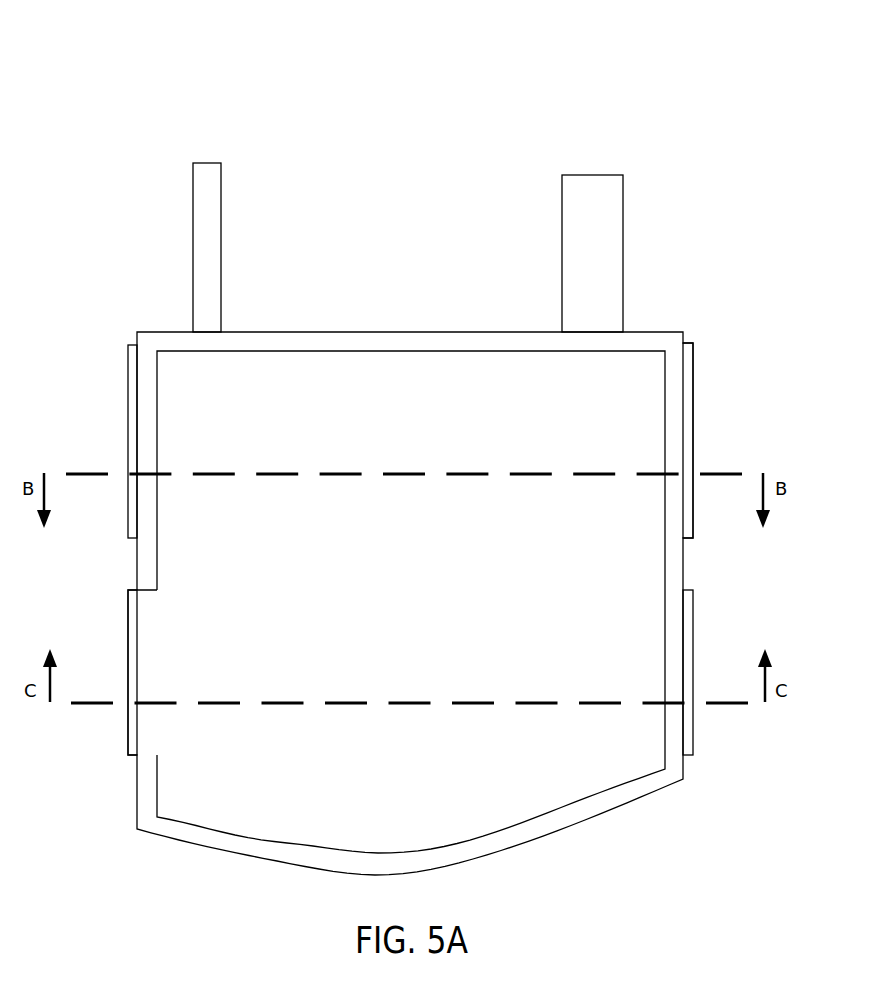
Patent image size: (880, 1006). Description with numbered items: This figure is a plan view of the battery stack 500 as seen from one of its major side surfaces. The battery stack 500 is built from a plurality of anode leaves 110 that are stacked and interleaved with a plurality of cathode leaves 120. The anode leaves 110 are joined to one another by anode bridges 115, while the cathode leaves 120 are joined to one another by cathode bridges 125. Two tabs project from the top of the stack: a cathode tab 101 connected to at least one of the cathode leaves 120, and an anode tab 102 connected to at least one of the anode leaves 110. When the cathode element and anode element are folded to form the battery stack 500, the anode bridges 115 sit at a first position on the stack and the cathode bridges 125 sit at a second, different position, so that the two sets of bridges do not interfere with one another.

The battery stack 500 is at (522, 88).
The cathode tab 101 is at (193, 242).
The anode tab 102 is at (623, 255).
The anode leaves 110 is at (173, 460).
The anode bridges 115 is at (128, 627).
The cathode leaves 120 is at (168, 331).
The cathode bridges 125 is at (128, 383).